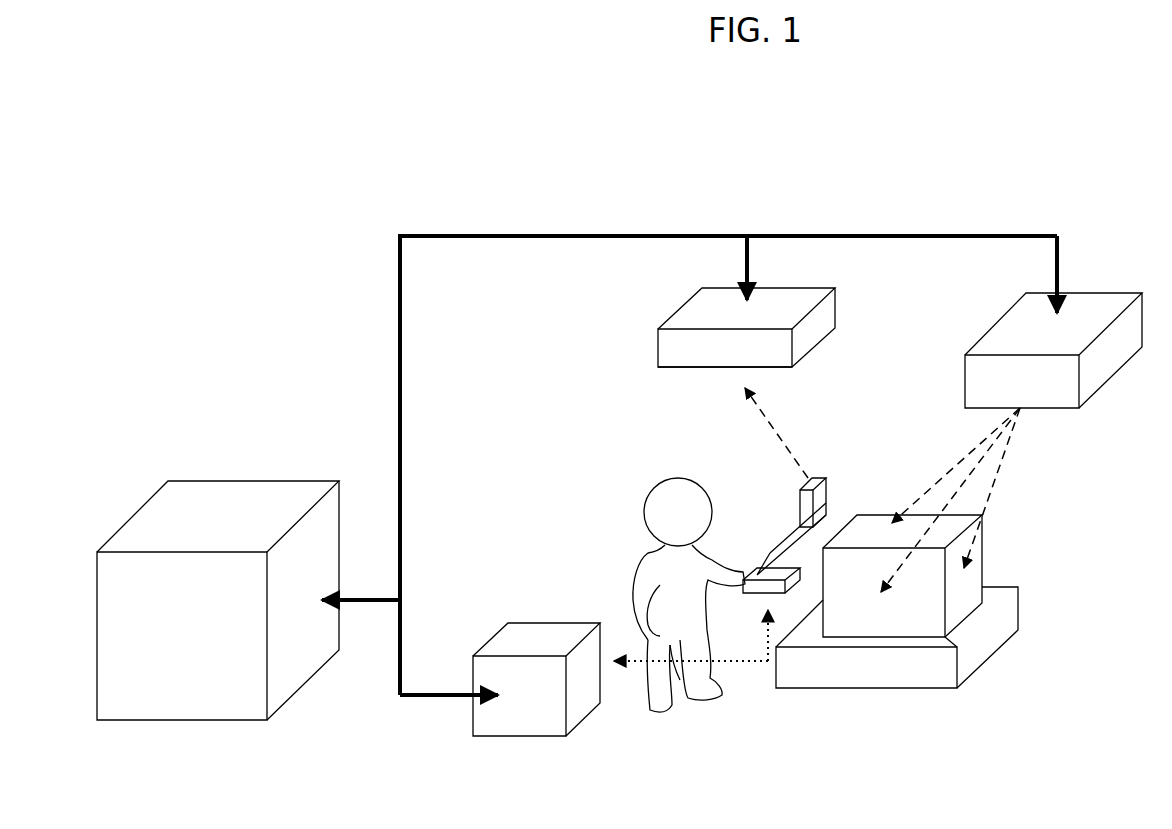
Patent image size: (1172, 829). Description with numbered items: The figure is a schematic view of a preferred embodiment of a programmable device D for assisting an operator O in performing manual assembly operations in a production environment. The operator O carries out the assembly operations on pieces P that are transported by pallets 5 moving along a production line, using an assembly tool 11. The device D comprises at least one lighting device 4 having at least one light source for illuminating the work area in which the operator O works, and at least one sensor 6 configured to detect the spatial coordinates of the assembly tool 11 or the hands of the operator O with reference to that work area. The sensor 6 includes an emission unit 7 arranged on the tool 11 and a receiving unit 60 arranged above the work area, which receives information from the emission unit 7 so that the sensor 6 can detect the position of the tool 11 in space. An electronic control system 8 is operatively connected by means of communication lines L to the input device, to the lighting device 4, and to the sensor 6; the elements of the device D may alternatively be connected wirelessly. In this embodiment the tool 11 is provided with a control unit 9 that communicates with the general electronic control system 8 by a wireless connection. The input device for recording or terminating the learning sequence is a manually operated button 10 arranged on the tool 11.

The programmable device D is at (268, 148).
The communication lines L is at (533, 232).
The lighting device 4 is at (1113, 290).
The pallet 5 is at (993, 660).
The sensor 6 is at (683, 298).
The receiving unit 60 is at (685, 372).
The emission unit 7 is at (786, 503).
The electronic control system 8 is at (210, 478).
The control unit 9 is at (527, 722).
The button 10 is at (770, 553).
The assembly tool 11 is at (792, 510).
The operator O is at (648, 557).
The pieces P is at (982, 545).